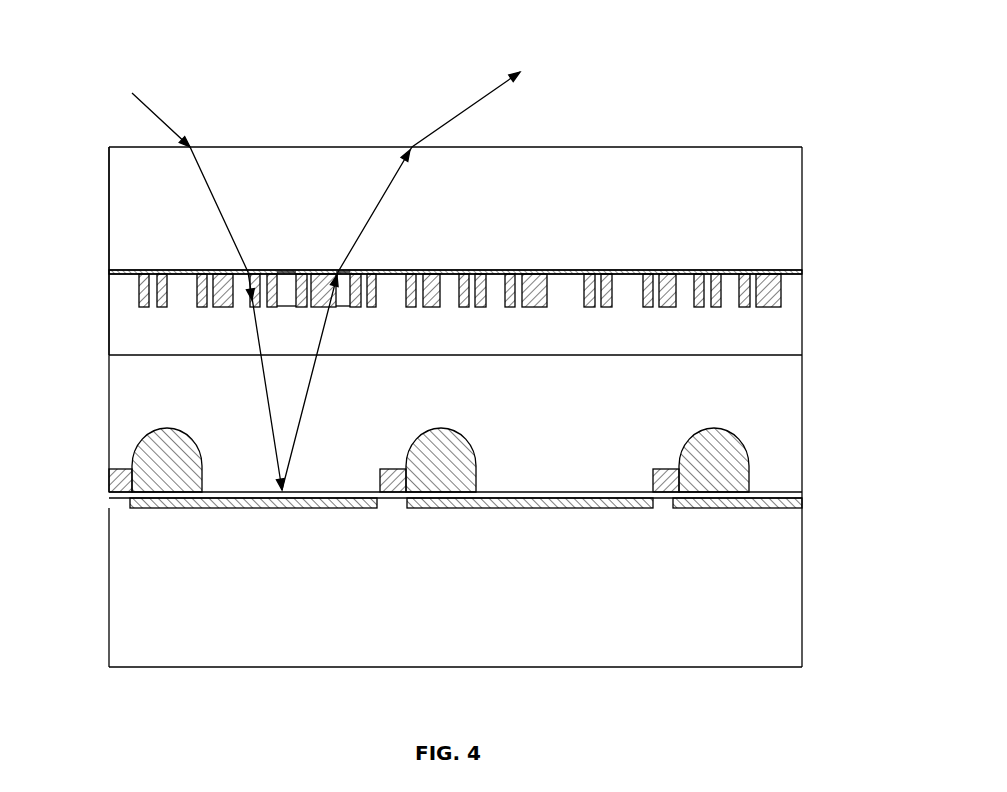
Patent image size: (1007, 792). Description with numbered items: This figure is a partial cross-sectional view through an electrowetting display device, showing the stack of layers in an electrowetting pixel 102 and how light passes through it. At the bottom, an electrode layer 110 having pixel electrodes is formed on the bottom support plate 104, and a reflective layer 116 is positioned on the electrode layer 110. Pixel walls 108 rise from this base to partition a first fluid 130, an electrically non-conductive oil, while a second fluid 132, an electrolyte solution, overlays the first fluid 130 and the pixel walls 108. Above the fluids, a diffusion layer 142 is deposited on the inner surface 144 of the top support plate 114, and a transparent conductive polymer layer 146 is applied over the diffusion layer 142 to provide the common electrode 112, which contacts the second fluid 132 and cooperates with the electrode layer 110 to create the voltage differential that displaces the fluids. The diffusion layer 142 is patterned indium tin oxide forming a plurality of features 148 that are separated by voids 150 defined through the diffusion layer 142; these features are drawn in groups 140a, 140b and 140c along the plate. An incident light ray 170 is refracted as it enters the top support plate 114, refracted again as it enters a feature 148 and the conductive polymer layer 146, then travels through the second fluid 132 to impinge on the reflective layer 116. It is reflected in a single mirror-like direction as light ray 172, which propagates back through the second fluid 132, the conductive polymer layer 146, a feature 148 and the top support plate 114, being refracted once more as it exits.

The electrowetting pixel 102 is at (256, 522).
The bottom support plate 104 is at (304, 652).
The pixel wall 108 is at (107, 478).
The electrode layer 110 is at (140, 510).
The common electrode 112 is at (98, 322).
The top support plate 114 is at (265, 157).
The reflective layer 116 is at (787, 495).
The first fluid 130 is at (148, 466).
The second fluid 132 is at (122, 381).
The first group of reflective elements 140a is at (146, 268).
The second group of reflective elements 140b is at (408, 268).
The third group of reflective elements 140c is at (730, 268).
The diffusion layer 142 is at (795, 290).
The inner surface of top support plate 144 is at (122, 272).
The conductive polymer layer 146 is at (788, 323).
The feature 148 is at (258, 270).
The void 150 is at (363, 312).
The incident light ray 170 is at (179, 134).
The reflected light ray 172 is at (457, 112).